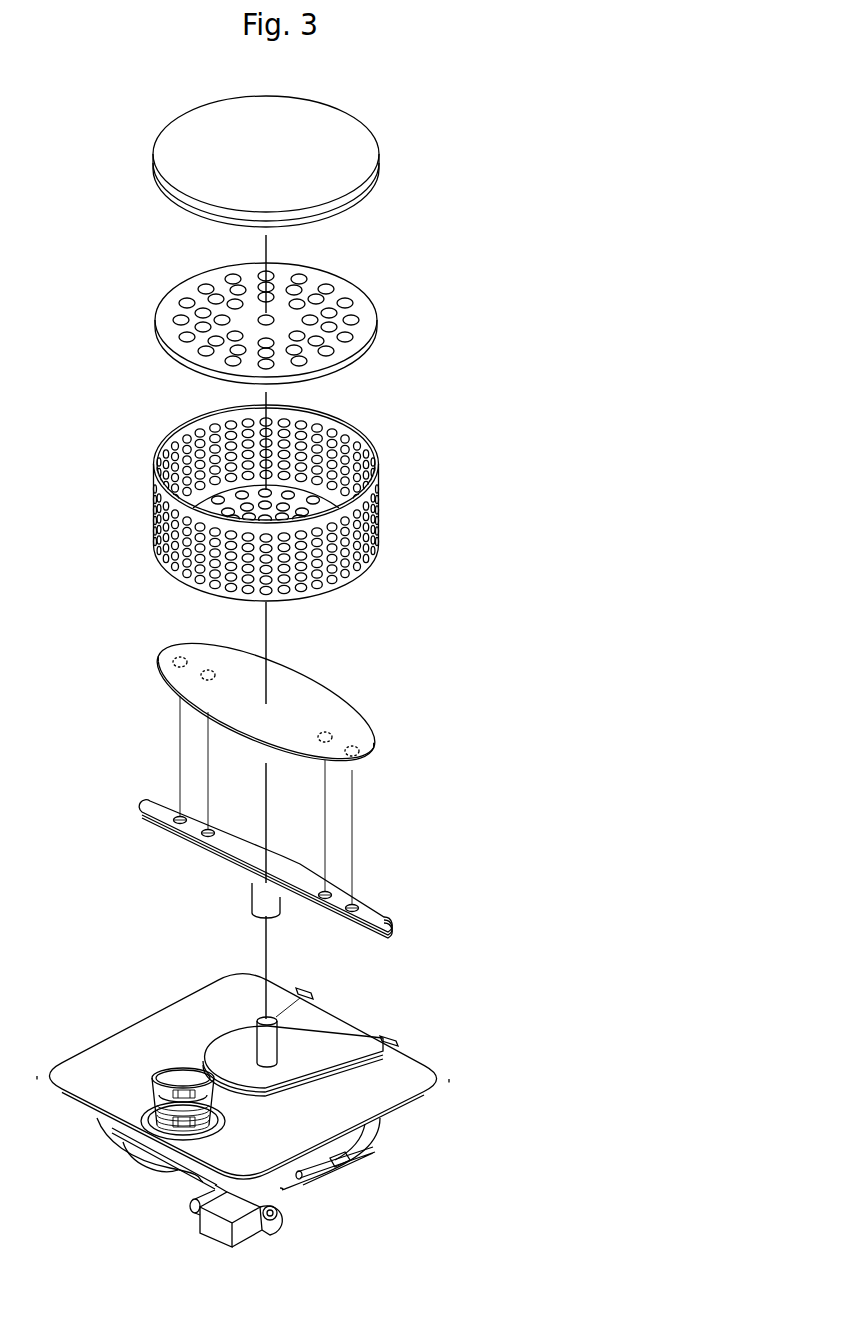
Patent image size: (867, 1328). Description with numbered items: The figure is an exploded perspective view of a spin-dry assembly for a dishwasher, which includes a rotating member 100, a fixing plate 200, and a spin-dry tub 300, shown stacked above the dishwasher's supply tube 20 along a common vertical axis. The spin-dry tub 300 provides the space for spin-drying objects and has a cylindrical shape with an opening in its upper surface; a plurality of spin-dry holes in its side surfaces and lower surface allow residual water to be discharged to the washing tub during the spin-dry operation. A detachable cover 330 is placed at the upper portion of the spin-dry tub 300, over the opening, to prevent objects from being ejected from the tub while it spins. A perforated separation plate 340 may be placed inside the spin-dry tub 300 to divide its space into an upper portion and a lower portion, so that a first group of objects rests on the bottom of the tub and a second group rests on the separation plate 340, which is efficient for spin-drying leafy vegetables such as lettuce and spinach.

The detachable cover 330 is at (358, 166).
The separation plate 340 is at (370, 329).
The spin-dry tub 300 is at (410, 492).
The fixing plate 200 is at (404, 740).
The rotating member 100 is at (416, 922).
The supply tube 20 is at (272, 1037).